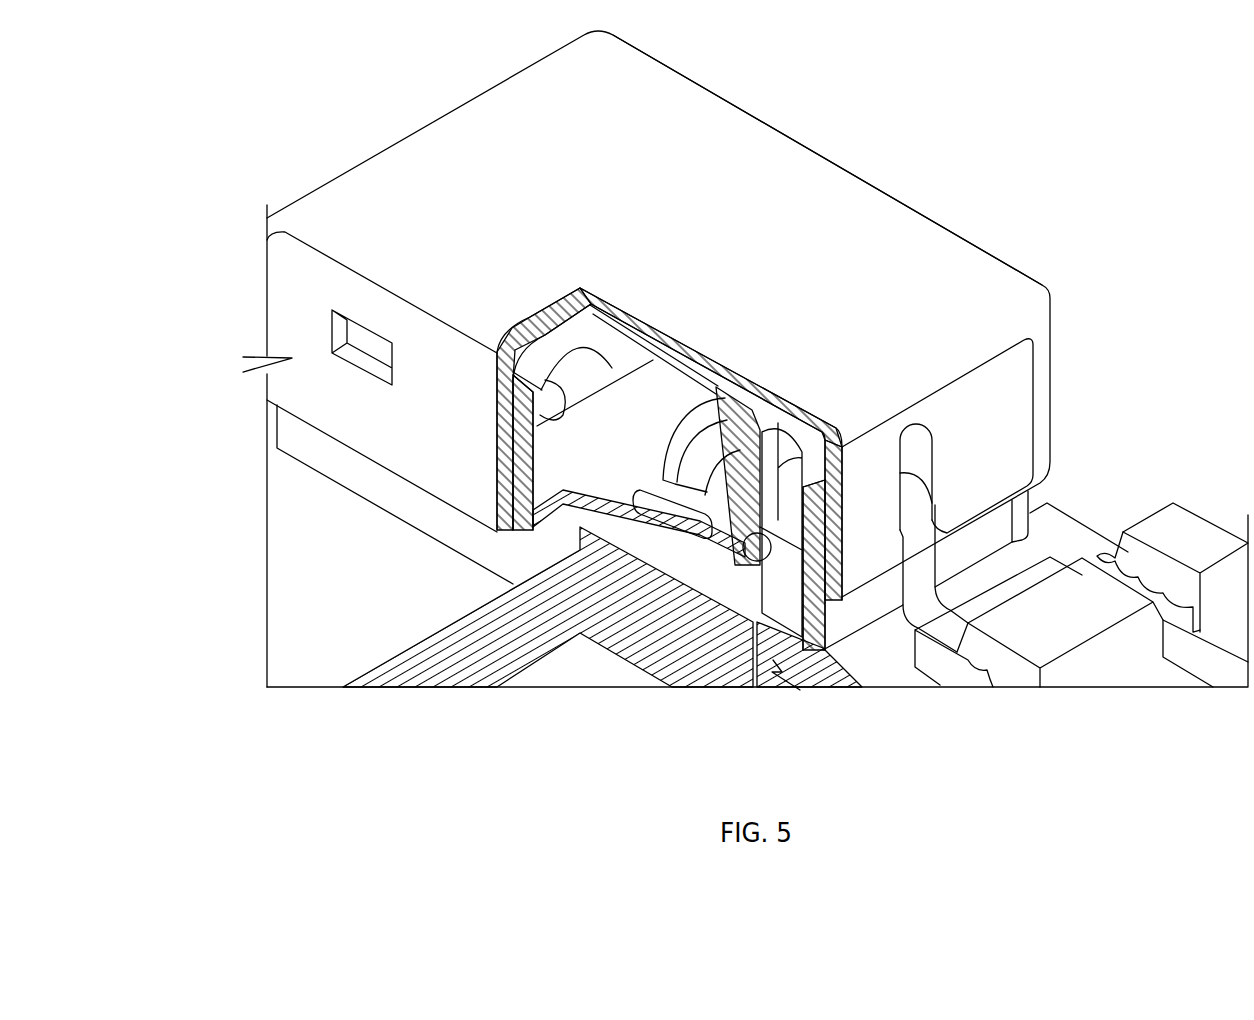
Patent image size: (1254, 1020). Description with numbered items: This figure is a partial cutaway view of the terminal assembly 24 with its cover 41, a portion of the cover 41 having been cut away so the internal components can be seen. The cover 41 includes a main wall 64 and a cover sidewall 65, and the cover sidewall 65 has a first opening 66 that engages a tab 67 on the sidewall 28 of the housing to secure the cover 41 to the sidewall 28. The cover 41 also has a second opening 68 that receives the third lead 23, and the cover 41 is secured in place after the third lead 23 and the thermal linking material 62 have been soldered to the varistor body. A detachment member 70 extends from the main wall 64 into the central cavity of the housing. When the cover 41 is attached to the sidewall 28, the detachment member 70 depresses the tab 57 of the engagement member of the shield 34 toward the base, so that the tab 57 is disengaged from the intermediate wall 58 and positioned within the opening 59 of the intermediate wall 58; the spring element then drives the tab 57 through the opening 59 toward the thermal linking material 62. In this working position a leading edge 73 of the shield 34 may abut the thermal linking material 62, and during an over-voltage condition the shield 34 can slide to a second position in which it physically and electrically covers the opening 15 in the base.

The cover 41 is at (752, 141).
The main wall 64 is at (910, 237).
The cover sidewall 65 is at (1013, 398).
The second opening 68 is at (916, 457).
The tab 67 is at (358, 335).
The first opening 66 is at (270, 374).
The sidewall 28 is at (312, 453).
The terminal assembly 24 is at (600, 664).
The third lead 23 is at (581, 328).
The thermal linking material 62 is at (517, 422).
The opening 15 is at (565, 376).
The leading edge 73 is at (606, 392).
The detachment member 70 is at (750, 428).
The intermediate wall 58 is at (725, 580).
The shield 34 is at (603, 470).
The tab 57 is at (753, 562).
The opening 59 is at (716, 556).